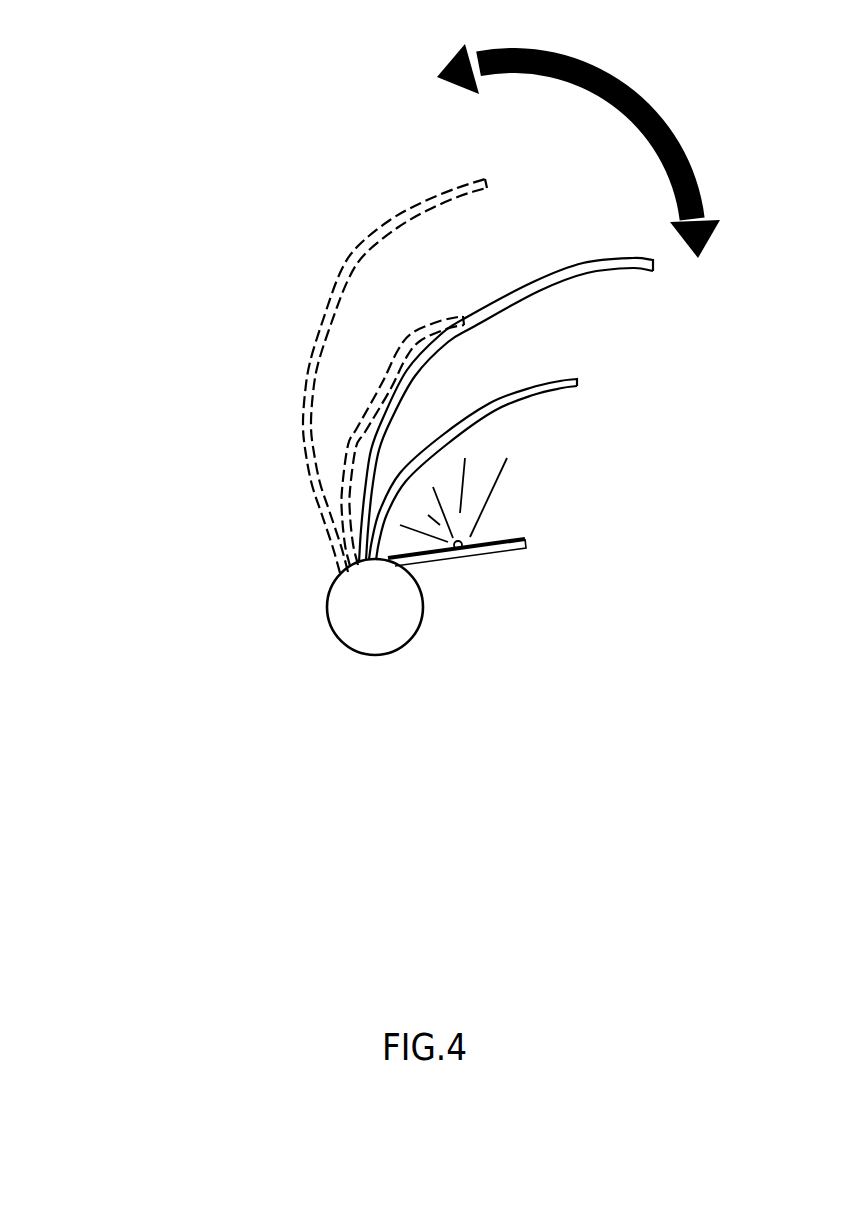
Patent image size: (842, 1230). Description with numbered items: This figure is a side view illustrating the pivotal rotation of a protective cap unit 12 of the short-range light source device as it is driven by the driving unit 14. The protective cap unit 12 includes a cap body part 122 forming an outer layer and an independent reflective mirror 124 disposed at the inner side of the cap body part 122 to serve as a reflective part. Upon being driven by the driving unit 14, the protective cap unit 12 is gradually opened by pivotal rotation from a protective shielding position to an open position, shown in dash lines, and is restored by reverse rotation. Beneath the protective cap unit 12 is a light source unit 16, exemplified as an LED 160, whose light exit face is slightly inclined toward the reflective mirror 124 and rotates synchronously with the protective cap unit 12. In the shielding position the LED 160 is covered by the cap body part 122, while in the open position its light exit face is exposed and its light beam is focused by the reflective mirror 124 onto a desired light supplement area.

The protective cap unit 12 is at (243, 376).
The cap body part 122 is at (583, 265).
The reflective mirror 124 is at (557, 383).
The driving unit 14 is at (303, 725).
The light source unit 16 is at (603, 653).
The LED 160 is at (470, 553).